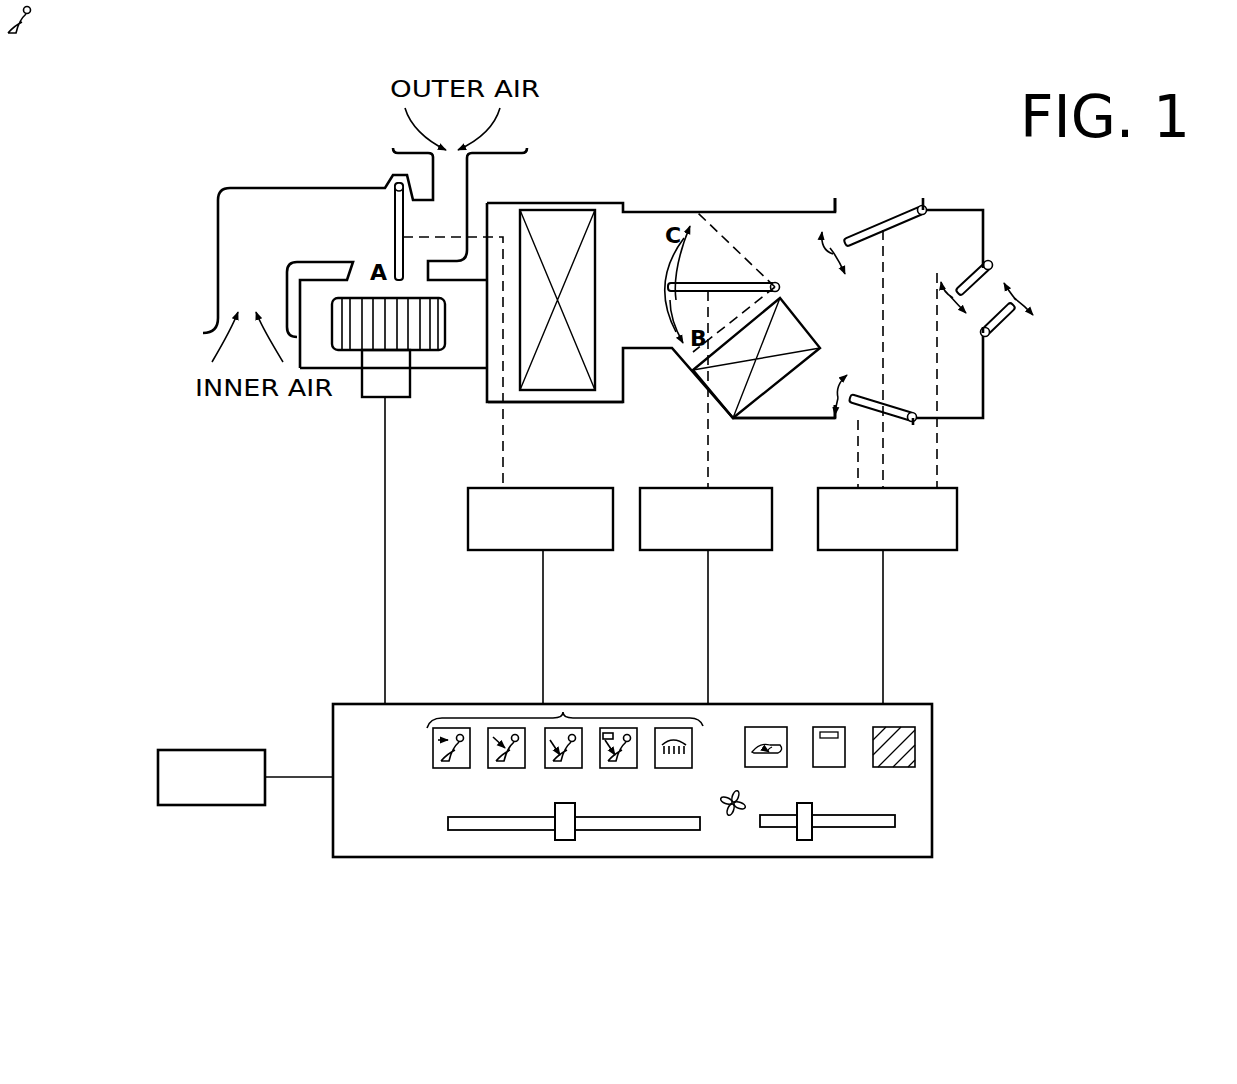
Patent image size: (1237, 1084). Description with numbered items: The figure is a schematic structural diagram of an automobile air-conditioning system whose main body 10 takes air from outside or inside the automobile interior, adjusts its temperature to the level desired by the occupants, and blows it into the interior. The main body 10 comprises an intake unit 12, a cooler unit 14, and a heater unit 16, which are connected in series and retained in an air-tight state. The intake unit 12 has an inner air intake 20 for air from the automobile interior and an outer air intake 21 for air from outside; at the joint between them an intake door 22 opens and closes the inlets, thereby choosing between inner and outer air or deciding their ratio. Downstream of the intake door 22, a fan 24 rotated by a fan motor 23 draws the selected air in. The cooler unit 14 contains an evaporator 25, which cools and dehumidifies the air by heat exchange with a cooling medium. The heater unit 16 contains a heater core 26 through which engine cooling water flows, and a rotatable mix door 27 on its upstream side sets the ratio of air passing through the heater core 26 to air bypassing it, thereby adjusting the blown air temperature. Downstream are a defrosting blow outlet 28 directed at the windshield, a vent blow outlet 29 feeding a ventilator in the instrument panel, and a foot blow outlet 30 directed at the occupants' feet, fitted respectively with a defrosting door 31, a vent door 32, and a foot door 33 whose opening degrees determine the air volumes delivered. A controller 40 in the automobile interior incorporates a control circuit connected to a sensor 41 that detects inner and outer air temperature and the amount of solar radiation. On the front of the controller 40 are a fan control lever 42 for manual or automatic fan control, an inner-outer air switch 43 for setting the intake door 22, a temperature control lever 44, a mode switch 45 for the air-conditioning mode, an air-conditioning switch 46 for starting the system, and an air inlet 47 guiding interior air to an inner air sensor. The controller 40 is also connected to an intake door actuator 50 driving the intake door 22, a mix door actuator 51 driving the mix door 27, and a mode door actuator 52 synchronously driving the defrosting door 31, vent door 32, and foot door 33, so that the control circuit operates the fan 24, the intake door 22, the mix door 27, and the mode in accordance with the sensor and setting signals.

The main body 10 is at (707, 193).
The intake unit 12 is at (450, 377).
The cooler unit 14 is at (563, 410).
The heater unit 16 is at (788, 423).
The inner air intake 20 is at (218, 222).
The outer air intake 21 is at (452, 187).
The intake door 22 is at (393, 224).
The fan motor 23 is at (397, 388).
The fan 24 is at (349, 352).
The evaporator 25 is at (557, 218).
The heater core 26 is at (697, 383).
The mix door 27 is at (727, 283).
The defrosting blow outlet 28 is at (888, 207).
The vent blow outlet 29 is at (1032, 285).
The foot blow outlet 30 is at (880, 435).
The defrosting door 31 is at (865, 230).
The vent door 32 is at (992, 270).
The foot door 33 is at (895, 407).
The controller 40 is at (960, 780).
The sensor 41 is at (208, 750).
The fan control lever 42 is at (805, 840).
The inner-outer air switch 43 is at (763, 727).
The temperature control lever 44 is at (565, 840).
The mode switch 45 is at (570, 702).
The air-conditioning switch 46 is at (828, 727).
The air inlet 47 is at (905, 727).
The intake door actuator 50 is at (503, 550).
The mix door actuator 51 is at (670, 550).
The mode door actuator 52 is at (850, 550).